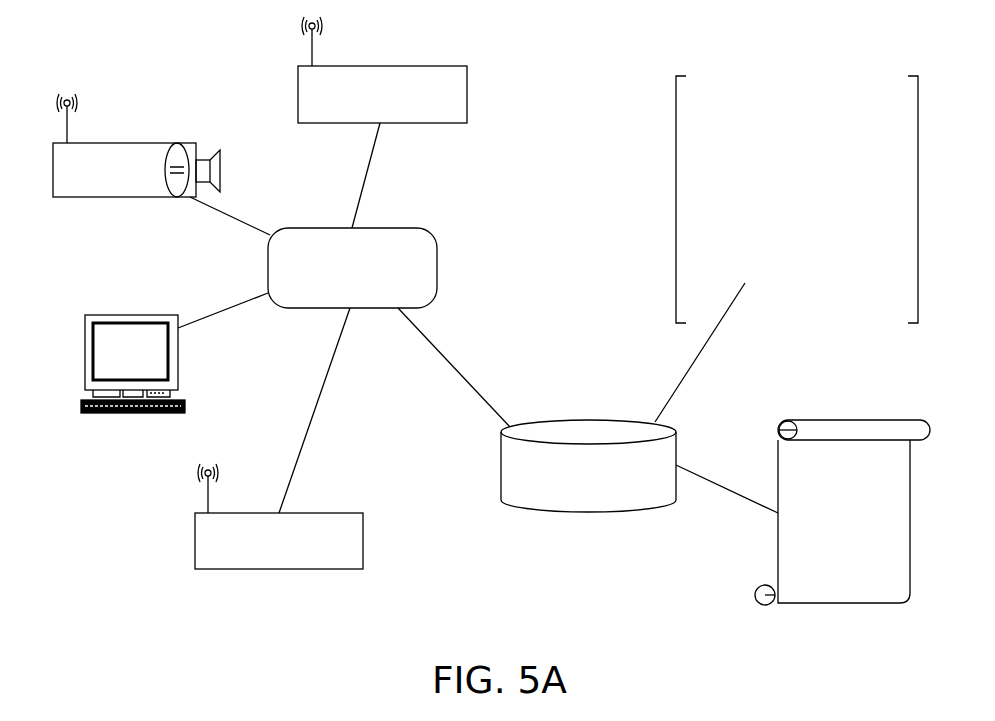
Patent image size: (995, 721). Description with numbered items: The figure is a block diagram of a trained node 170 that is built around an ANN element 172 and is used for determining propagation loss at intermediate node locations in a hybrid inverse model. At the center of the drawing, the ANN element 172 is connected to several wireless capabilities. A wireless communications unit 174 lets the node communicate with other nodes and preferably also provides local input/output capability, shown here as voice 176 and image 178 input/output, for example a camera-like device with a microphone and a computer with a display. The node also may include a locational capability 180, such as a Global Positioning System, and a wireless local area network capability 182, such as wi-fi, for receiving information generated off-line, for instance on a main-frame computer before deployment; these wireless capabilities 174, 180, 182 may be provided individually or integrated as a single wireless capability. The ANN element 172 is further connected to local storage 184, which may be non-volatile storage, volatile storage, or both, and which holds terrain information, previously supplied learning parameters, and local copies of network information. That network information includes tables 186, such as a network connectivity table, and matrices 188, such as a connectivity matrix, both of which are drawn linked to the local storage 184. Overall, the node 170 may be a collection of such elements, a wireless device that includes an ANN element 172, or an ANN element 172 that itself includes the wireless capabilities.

The trained node 170 is at (546, 308).
The ANN element 172 is at (413, 228).
The wireless communications unit 174 is at (113, 143).
The voice input/output 176 is at (183, 147).
The image input/output 178 is at (147, 315).
The locational capability (GPS) 180 is at (436, 66).
The wireless local area network capability 182 is at (305, 569).
The local storage 184 is at (501, 462).
The tables 186 is at (828, 420).
The matrices 188 is at (676, 112).